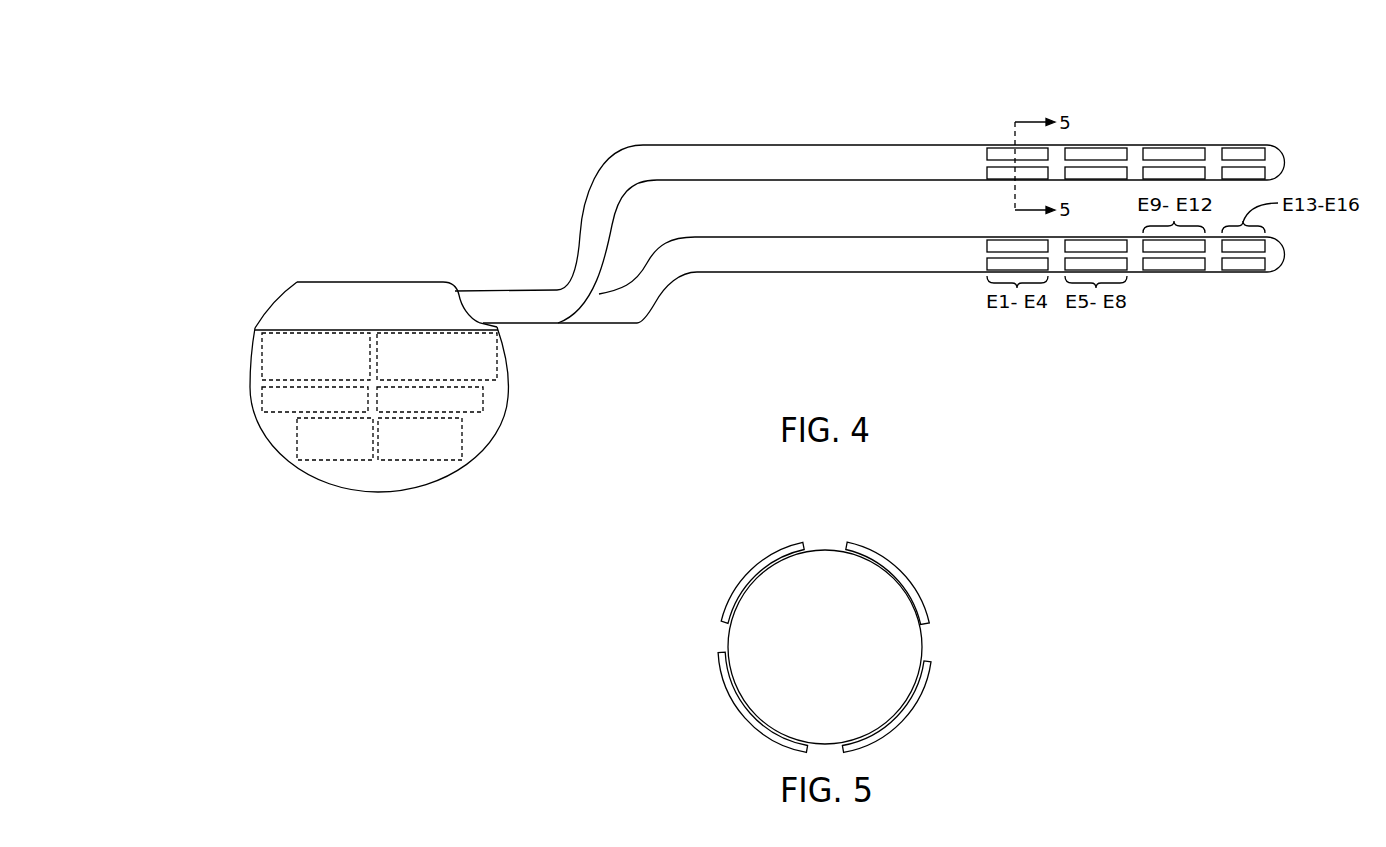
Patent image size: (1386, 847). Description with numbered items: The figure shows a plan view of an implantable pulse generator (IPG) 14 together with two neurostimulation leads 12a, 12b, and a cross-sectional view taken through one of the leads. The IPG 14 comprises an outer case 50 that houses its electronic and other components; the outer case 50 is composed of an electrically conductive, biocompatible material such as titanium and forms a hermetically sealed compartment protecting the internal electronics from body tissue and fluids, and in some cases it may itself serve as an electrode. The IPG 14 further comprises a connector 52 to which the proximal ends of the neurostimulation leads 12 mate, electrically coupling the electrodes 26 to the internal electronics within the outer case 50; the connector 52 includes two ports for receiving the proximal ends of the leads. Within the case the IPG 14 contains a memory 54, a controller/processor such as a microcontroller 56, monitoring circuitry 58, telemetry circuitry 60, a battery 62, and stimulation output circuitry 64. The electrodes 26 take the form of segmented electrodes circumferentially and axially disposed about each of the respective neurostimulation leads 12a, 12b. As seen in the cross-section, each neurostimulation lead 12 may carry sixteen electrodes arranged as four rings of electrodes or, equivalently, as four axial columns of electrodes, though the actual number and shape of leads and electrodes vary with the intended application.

In FIG. 5, the neurostimulation lead 12 is at (825, 623).
In FIG. 4, the neurostimulation lead 12a is at (712, 107).
In FIG. 4, the neurostimulation lead 12b is at (762, 283).
In FIG. 4, the implantable pulse generator 14 is at (382, 374).
In FIG. 4, the electrodes 26 is at (1183, 175).
In FIG. 5, the electrodes 26 is at (722, 675).
In FIG. 4, the outer case 50 is at (500, 383).
In FIG. 4, the connector 52 is at (388, 290).
In FIG. 4, the memory 54 is at (262, 396).
In FIG. 4, the controller/processor 56 is at (262, 356).
In FIG. 4, the monitoring circuitry 58 is at (410, 460).
In FIG. 4, the telemetry circuitry 60 is at (325, 460).
In FIG. 4, the battery 62 is at (484, 400).
In FIG. 4, the stimulation output circuitry 64 is at (497, 350).